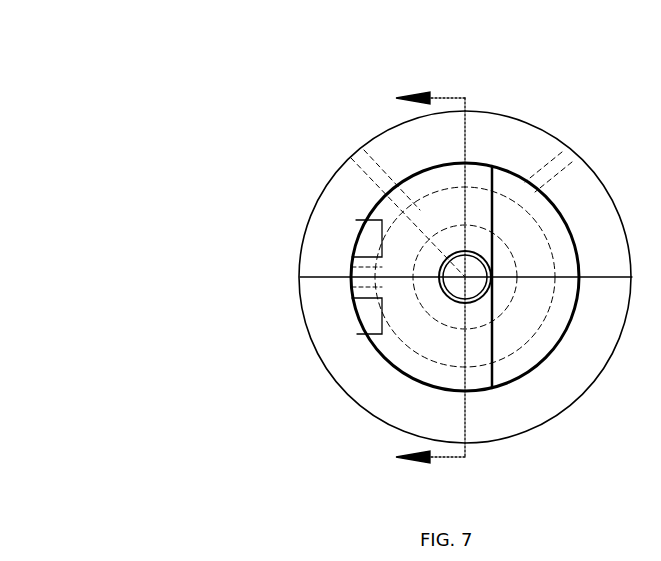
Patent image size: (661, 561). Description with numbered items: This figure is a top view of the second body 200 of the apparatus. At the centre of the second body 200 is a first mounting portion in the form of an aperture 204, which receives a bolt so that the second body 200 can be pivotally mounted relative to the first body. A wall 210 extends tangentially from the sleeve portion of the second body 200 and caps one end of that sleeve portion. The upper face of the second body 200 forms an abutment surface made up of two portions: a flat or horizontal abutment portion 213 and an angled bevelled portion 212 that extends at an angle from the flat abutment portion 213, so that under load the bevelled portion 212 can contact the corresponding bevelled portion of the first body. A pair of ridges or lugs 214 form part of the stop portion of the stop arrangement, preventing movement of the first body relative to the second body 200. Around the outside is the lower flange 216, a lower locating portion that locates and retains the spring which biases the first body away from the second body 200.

The second body 200 is at (184, 100).
The aperture 204 is at (482, 256).
The wall 210 is at (473, 183).
The bevelled portion 212 is at (530, 348).
The flat abutment portion 213 is at (418, 176).
The lugs 214 is at (368, 235).
The lower flange 216 is at (333, 370).